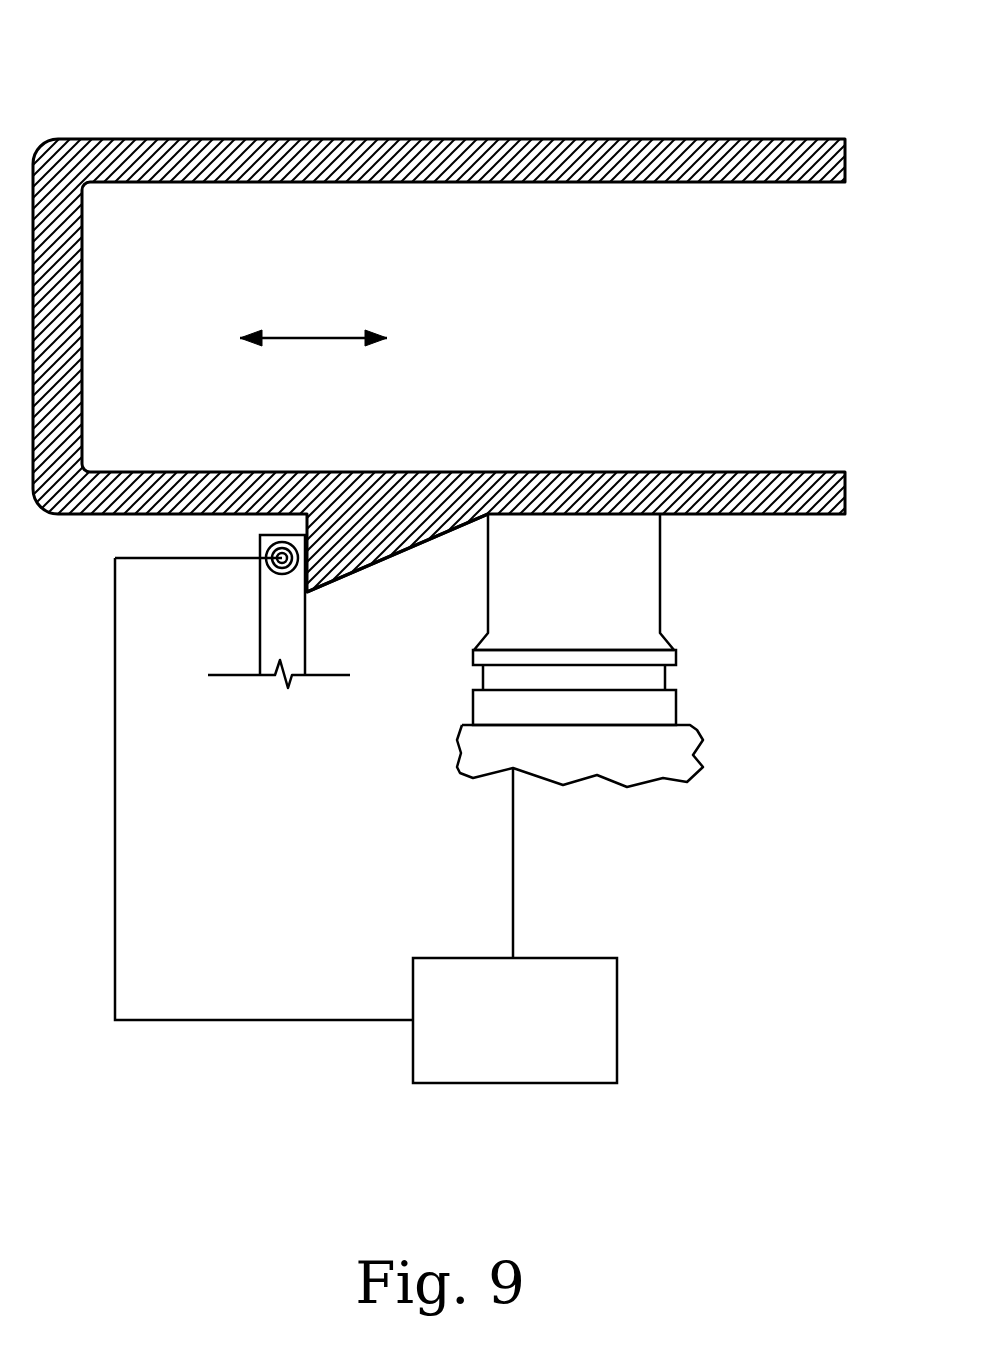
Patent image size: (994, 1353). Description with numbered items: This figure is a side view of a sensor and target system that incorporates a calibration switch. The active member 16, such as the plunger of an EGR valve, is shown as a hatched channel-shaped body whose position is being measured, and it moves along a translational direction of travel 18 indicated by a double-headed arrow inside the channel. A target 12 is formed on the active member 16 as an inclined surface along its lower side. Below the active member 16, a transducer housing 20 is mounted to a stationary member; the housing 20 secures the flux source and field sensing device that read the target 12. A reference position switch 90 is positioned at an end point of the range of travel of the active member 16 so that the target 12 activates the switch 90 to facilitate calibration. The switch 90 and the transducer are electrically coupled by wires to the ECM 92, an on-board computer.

The active member 16 is at (369, 138).
The direction of travel 18 is at (312, 338).
The target 12 is at (331, 568).
The reference position switch 90 is at (262, 568).
The housing 20 is at (630, 580).
The ECM 92 is at (605, 1012).